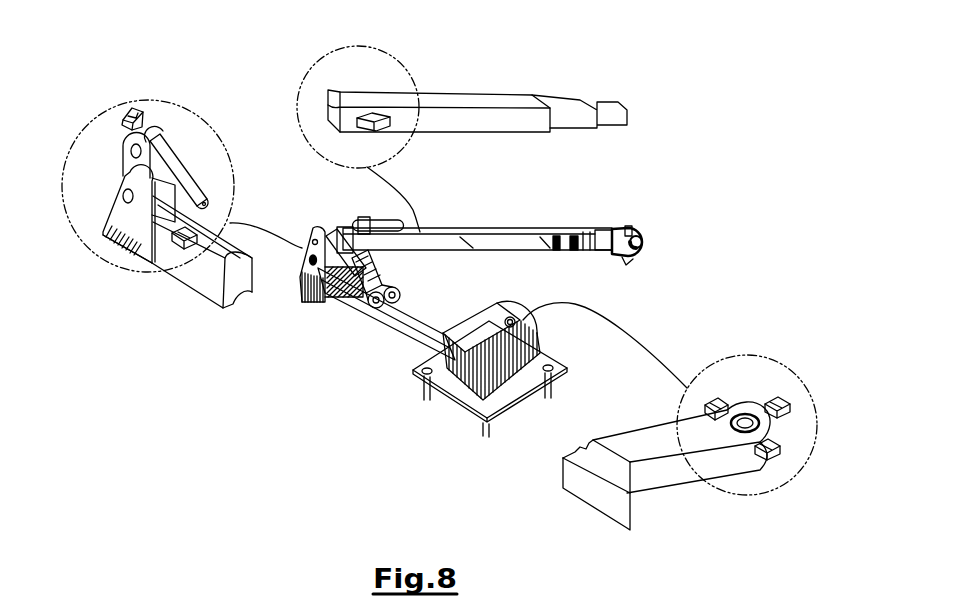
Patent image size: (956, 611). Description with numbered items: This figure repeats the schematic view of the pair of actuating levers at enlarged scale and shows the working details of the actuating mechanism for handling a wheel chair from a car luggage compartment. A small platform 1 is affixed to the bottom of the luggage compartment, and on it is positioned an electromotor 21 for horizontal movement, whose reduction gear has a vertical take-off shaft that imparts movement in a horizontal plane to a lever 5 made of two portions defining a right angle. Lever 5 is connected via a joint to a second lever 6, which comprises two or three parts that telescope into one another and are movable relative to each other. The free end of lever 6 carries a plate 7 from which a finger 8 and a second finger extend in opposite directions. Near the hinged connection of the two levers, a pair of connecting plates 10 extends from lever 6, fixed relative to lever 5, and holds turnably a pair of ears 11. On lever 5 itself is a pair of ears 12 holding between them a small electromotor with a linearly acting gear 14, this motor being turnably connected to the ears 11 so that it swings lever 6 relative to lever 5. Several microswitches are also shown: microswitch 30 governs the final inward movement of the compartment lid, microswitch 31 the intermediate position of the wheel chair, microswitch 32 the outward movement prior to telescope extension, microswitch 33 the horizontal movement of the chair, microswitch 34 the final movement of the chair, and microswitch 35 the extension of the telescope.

The platform 1 is at (443, 390).
The lever 5 is at (245, 285).
The second lever 6 is at (520, 100).
The plate 7 is at (642, 232).
The finger 8 is at (630, 228).
The connecting plates 10 is at (107, 227).
The ears 11 is at (165, 133).
The ears 12 is at (358, 315).
The linearly acting gear 14 is at (200, 192).
The electromotor for horizontal movement 21 is at (523, 400).
The microswitch 30 is at (712, 398).
The microswitch 31 is at (790, 398).
The microswitch 32 is at (778, 444).
The microswitch 33 is at (122, 114).
The microswitch 34 is at (178, 247).
The microswitch 35 is at (380, 110).